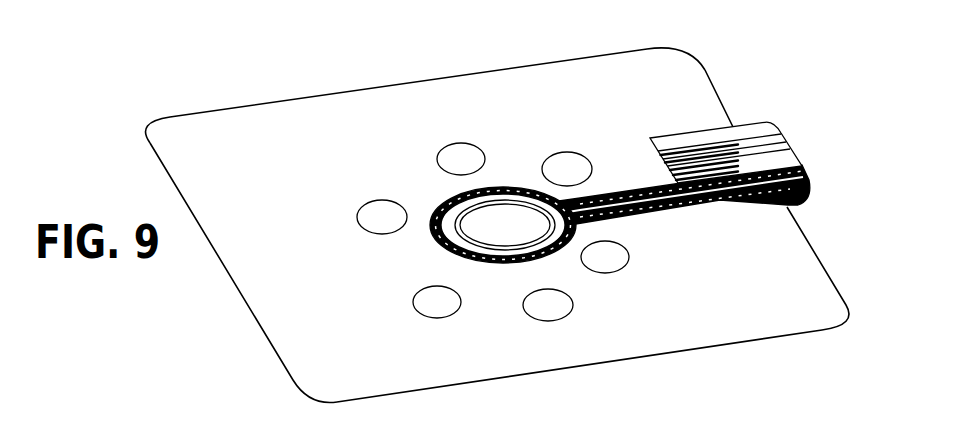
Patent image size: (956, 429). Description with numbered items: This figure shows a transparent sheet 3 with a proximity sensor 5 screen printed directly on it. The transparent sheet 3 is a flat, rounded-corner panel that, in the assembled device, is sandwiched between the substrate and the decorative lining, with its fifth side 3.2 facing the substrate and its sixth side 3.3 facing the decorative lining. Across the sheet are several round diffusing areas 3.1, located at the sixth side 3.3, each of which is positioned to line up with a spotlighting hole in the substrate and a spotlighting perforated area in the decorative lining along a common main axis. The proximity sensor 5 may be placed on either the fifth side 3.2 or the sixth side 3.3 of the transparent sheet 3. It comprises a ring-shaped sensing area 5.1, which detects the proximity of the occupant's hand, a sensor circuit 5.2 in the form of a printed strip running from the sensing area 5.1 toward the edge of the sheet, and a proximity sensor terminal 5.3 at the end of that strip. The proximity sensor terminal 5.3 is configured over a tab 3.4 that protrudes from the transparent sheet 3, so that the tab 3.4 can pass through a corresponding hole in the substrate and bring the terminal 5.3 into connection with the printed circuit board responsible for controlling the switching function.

The transparent sheet 3 is at (725, 58).
The diffusing areas 3.1 is at (463, 153).
The fifth side 3.2 is at (354, 118).
The sixth side 3.3 is at (263, 275).
The tab 3.4 is at (745, 125).
The proximity sensor 5 is at (635, 195).
The sensing area 5.1 is at (498, 267).
The sensor circuit 5.2 is at (680, 205).
The proximity sensor terminal 5.3 is at (670, 153).